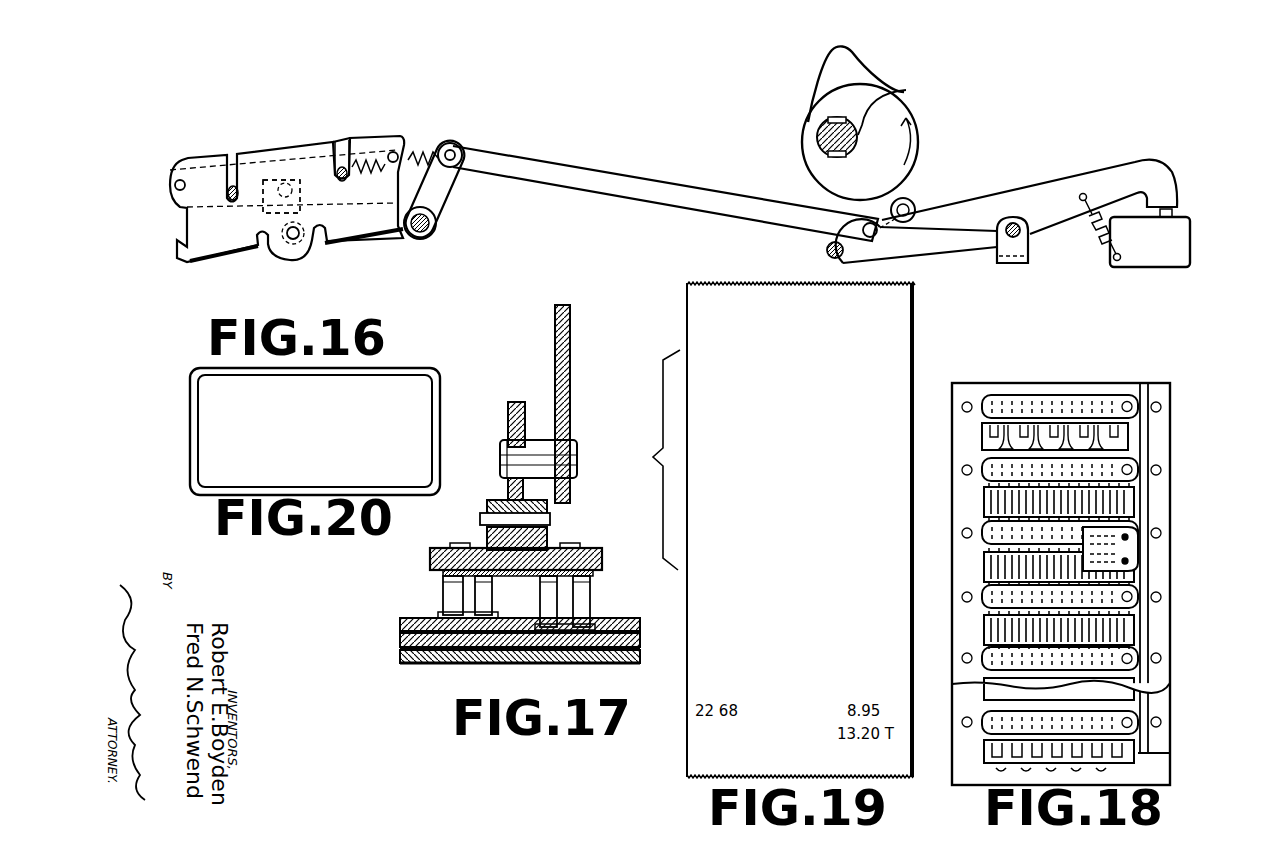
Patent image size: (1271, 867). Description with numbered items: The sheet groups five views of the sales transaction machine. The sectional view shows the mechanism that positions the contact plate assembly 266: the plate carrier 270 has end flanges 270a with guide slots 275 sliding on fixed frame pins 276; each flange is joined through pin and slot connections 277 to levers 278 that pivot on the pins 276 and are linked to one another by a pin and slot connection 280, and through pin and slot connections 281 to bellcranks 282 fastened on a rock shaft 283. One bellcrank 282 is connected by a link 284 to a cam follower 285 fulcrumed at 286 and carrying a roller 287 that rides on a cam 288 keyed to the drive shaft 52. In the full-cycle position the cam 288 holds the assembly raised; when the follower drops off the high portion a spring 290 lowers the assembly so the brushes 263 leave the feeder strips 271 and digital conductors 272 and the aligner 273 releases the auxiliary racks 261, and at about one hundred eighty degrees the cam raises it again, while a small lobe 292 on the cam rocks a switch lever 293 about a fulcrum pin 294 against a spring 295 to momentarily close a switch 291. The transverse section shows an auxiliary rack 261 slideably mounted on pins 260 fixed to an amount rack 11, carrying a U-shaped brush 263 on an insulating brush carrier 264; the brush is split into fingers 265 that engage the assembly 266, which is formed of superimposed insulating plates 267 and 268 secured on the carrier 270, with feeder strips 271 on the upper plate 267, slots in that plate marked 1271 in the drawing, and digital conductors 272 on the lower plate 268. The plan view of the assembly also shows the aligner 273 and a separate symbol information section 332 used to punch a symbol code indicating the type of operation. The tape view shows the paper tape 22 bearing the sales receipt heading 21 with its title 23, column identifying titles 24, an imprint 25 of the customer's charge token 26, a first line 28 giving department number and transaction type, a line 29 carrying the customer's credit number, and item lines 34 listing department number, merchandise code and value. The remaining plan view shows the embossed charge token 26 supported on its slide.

In FIG. 16, the plate carrier 270 is at (252, 255).
In FIG. 17, the plate carrier 270 is at (453, 665).
In FIG. 16, the end flange 270a is at (330, 141).
In FIG. 16, the guide slots 275 is at (232, 156).
In FIG. 16, the fixed frame pins 276 is at (228, 193).
In FIG. 16, the pin and slot connections 277 is at (175, 185).
In FIG. 16, the levers 278 is at (208, 165).
In FIG. 16, the pin and slot connection 280 is at (283, 193).
In FIG. 16, the pin and slot connections 281 is at (293, 242).
In FIG. 16, the bellcranks 282 is at (385, 250).
In FIG. 16, the rock shaft 283 is at (438, 226).
In FIG. 16, the link 284 is at (645, 184).
In FIG. 16, the cam follower 285 is at (880, 218).
In FIG. 16, the fulcrum 286 is at (827, 249).
In FIG. 16, the roller 287 is at (914, 204).
In FIG. 16, the cam 288 is at (922, 142).
In FIG. 16, the small lobe 292 is at (846, 49).
In FIG. 16, the drive shaft 52 is at (907, 91).
In FIG. 16, the switch lever 293 is at (1093, 180).
In FIG. 16, the fulcrum pin 294 is at (1005, 231).
In FIG. 16, the spring 295 is at (1090, 235).
In FIG. 16, the switch 291 is at (1192, 242).
In FIG. 16, the spring 290 is at (413, 160).
In FIG. 20, the customer's charge token 26 is at (205, 440).
In FIG. 17, the amount racks 11 is at (570, 388).
In FIG. 17, the auxiliary rack 261 is at (507, 412).
In FIG. 17, the pins 260 is at (517, 452).
In FIG. 17, the digital conductors 272 is at (536, 628).
In FIG. 17, the brush carrier 264 is at (592, 548).
In FIG. 17, the brush 263 is at (443, 573).
In FIG. 18, the brush 263 is at (1103, 553).
In FIG. 17, the brush fingers 265 is at (548, 598).
In FIG. 17, the feeder strips 271 is at (445, 604).
In FIG. 17, the spacer 1271 is at (594, 622).
In FIG. 17, the contact plate assembly 266 is at (641, 610).
In FIG. 17, the upper plate 267 is at (400, 626).
In FIG. 17, the lower plate 268 is at (400, 652).
In FIG. 19, the paper tape 22 is at (693, 314).
In FIG. 19, the title 23 is at (895, 353).
In FIG. 19, the imprint 25 is at (902, 425).
In FIG. 19, the column identifying titles 24 is at (815, 509).
In FIG. 19, the sales receipt heading 21 is at (652, 458).
In FIG. 19, the first line 28 is at (690, 641).
In FIG. 19, the line 29 is at (690, 662).
In FIG. 19, the item line 34 is at (690, 686).
In FIG. 18, the aligner 273 is at (1150, 453).
In FIG. 18, the symbol information section 332 is at (1128, 437).